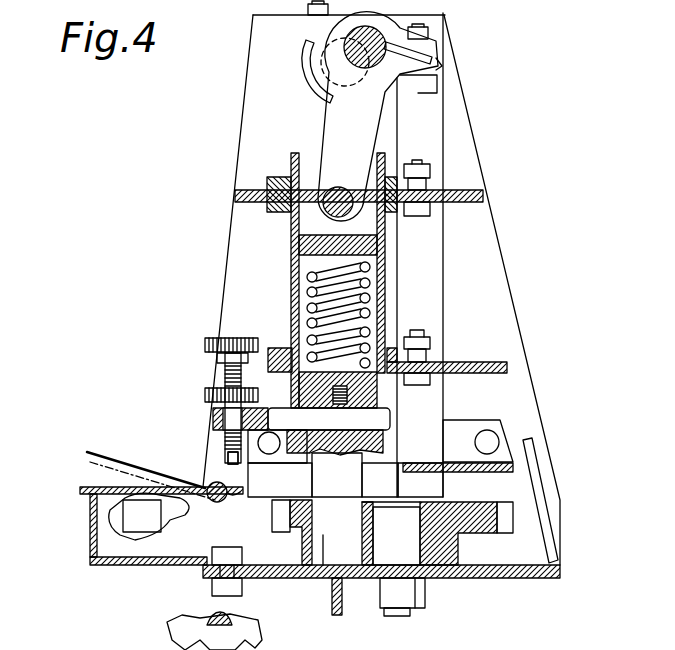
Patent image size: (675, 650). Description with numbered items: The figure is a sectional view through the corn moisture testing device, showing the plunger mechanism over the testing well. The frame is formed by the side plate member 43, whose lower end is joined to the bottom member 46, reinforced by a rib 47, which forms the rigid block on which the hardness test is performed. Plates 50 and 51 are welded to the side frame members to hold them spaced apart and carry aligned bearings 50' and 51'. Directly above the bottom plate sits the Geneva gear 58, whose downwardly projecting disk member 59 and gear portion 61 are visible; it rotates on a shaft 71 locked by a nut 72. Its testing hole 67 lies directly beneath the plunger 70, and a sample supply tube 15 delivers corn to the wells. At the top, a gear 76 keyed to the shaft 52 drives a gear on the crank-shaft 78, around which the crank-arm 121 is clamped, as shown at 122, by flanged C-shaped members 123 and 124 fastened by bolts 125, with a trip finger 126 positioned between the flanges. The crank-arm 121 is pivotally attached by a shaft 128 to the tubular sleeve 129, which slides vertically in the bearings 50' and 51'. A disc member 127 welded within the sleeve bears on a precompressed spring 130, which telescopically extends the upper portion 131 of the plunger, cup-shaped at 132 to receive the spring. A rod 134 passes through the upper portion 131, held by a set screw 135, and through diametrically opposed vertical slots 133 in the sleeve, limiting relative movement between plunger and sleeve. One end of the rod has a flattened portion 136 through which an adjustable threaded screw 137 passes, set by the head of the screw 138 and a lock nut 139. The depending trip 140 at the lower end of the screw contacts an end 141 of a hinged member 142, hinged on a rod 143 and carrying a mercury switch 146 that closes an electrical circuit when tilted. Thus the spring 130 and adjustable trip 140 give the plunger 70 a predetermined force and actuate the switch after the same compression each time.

The sample supply tube 15 is at (432, 296).
The side plate member 43 is at (248, 150).
The bottom member 46 is at (500, 578).
The rib 47 is at (332, 602).
The plate 50 is at (376, 188).
The bearing 50' is at (220, 184).
The plate 51 is at (473, 357).
The bearing 51' is at (278, 338).
The shaft 52 is at (214, 615).
The Geneva gear 58 is at (473, 530).
The disk member 59 is at (440, 562).
The gear portion 61 is at (505, 522).
The testing hole 67 is at (323, 560).
The plunger 70 is at (357, 485).
The shaft 71 is at (392, 610).
The nut 72 is at (422, 605).
The gear 76 is at (176, 625).
The crank-shaft 78 is at (398, 46).
The crank-arm 121 is at (340, 124).
The clamp 122 is at (294, 37).
The C-shaped member 123 is at (412, 86).
The C-shaped member 124 is at (428, 51).
The bolt 125 is at (426, 30).
The trip finger 126 is at (438, 68).
The disc member 127 is at (300, 245).
The shaft 128 is at (322, 208).
The tubular sleeve 129 is at (284, 286).
The precompressed spring 130 is at (310, 305).
The upper portion 131 is at (386, 402).
The cup-shaped portion 132 is at (398, 376).
The vertical slot 133 is at (385, 396).
The rod 134 is at (384, 422).
The set screw 135 is at (332, 408).
The flattened portion 136 is at (213, 421).
The adjustable threaded screw 137 is at (225, 376).
The screw head 138 is at (205, 345).
The lock nut 139 is at (205, 398).
The trip 140 is at (228, 456).
The end 141 is at (238, 492).
The hinged member 142 is at (90, 466).
The rod 143 is at (210, 485).
The mercury switch 146 is at (122, 522).